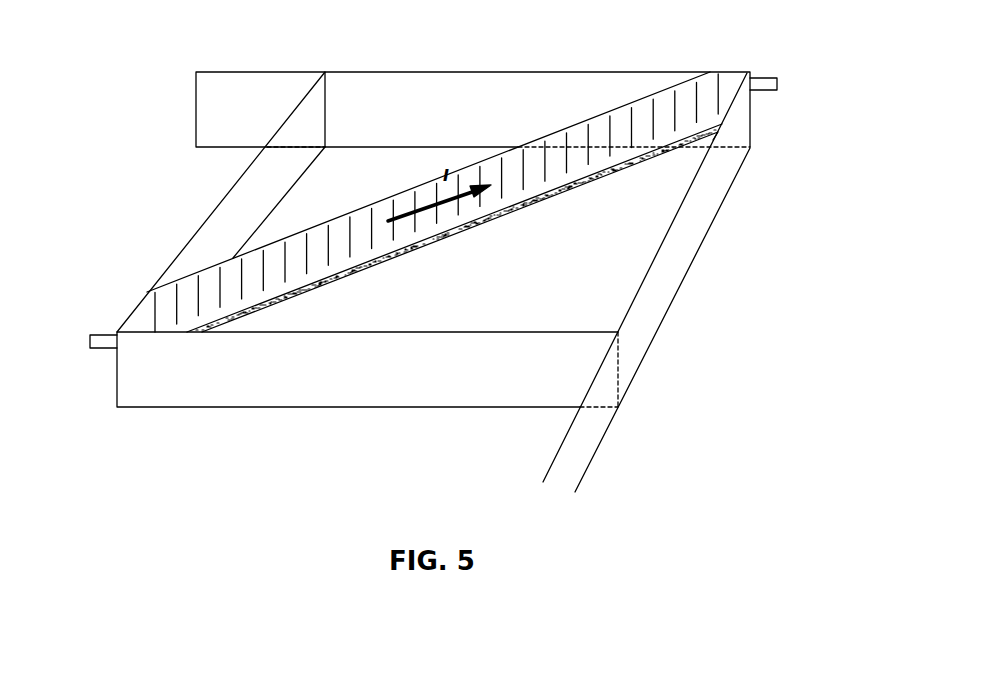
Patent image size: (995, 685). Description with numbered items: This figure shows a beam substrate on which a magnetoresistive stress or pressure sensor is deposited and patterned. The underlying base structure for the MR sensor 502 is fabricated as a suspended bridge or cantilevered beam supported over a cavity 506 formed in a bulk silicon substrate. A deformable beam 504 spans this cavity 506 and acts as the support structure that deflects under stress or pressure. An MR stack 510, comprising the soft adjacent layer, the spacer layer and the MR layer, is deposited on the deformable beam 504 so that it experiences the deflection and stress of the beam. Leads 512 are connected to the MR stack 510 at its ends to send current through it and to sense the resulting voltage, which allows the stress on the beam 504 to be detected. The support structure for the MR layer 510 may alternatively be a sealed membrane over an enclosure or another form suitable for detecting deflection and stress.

The MR sensor 502 is at (131, 89).
The deformable beam 504 is at (500, 225).
The cavity 506 is at (544, 313).
The MR stack 510 is at (338, 239).
The leads 512 is at (90, 327).